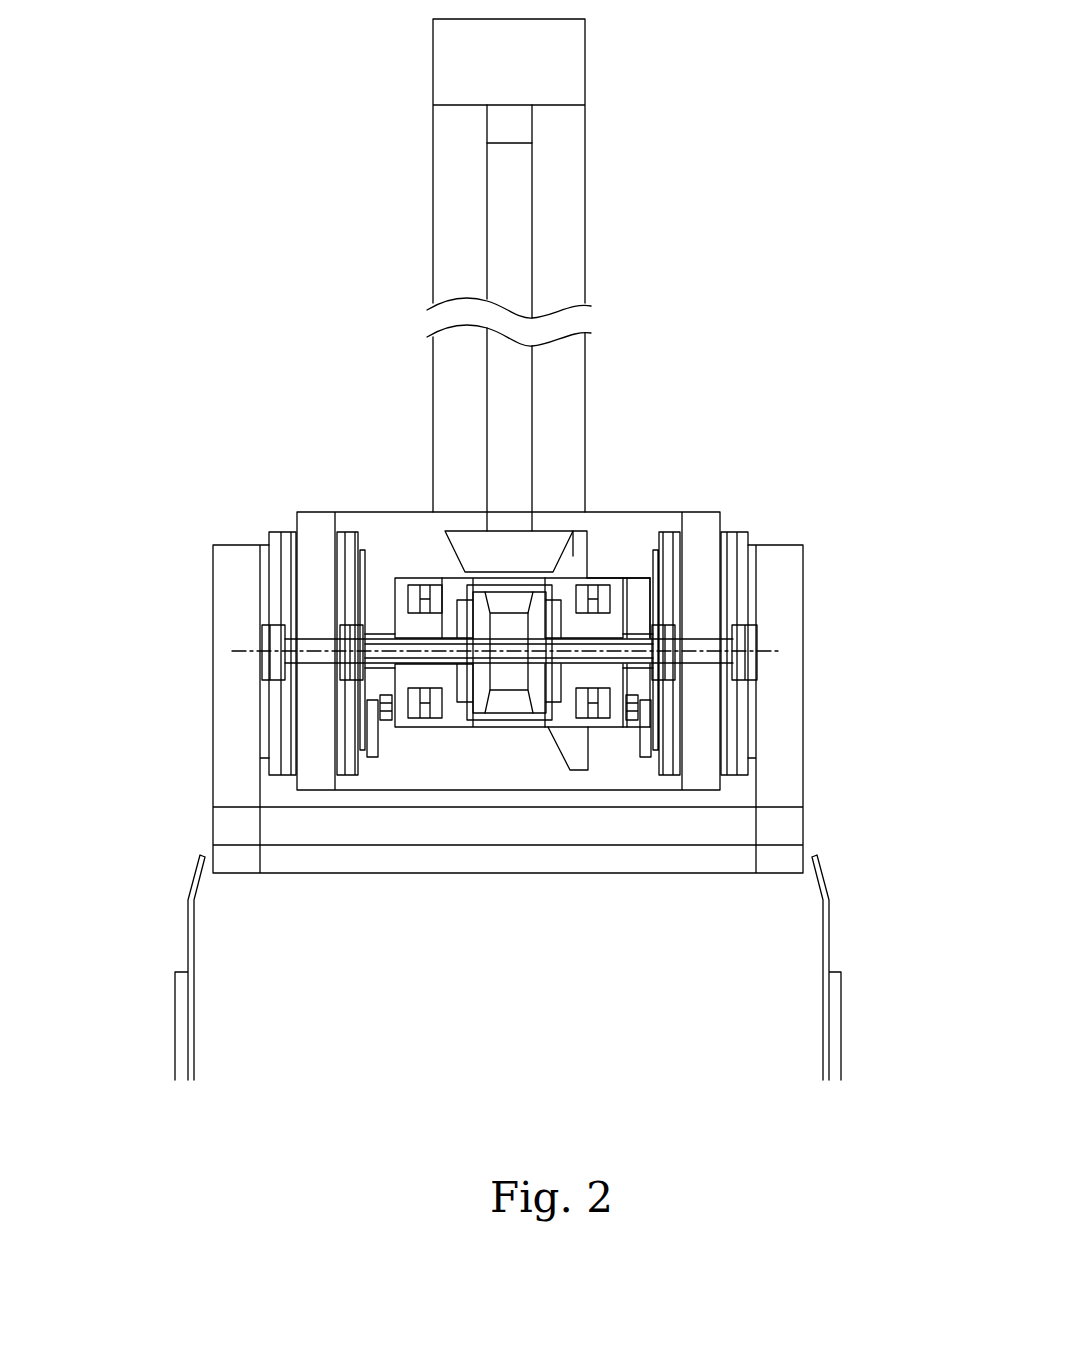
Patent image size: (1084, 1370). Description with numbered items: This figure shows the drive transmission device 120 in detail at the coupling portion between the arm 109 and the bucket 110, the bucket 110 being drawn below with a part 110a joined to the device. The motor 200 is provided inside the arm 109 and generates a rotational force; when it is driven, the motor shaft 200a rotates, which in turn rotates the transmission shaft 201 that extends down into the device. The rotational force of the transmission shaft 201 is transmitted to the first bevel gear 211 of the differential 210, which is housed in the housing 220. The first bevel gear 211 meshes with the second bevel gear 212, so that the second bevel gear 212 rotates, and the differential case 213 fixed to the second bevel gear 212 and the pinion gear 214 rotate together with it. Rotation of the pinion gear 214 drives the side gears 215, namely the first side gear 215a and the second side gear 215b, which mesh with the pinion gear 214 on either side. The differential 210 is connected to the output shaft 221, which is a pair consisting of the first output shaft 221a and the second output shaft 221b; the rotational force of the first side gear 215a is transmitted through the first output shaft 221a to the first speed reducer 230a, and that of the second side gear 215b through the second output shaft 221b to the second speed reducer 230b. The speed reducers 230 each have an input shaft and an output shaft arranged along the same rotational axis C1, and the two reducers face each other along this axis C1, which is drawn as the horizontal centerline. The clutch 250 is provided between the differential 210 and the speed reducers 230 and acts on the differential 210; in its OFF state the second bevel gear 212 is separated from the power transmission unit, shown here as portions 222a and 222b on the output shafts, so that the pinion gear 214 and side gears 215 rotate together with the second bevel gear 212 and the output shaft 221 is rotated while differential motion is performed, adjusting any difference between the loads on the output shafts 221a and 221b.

The motor 200 is at (553, 168).
The motor shaft 200a is at (525, 135).
The transmission shaft 201 is at (524, 242).
The arm 109 is at (566, 423).
The drive transmission device 120 is at (781, 480).
The first bevel gear 211 is at (482, 538).
The differential 210 is at (598, 528).
The second bevel gear 212 is at (575, 557).
The differential case 213 is at (453, 587).
The pinion gear 214 is at (420, 582).
The side gears 215 is at (493, 778).
The first side gear 215a is at (537, 690).
The second side gear 215b is at (482, 690).
The housing 220 is at (627, 790).
The clutch 250 is at (432, 718).
The output shaft 221 is at (502, 649).
The first output shaft 221a is at (727, 680).
The second output shaft 221b is at (343, 645).
The first gear 222a is at (657, 622).
The second gear 222b is at (343, 671).
The speed reducers 230 is at (501, 653).
The first speed reducer 230a is at (740, 608).
The second speed reducer 230b is at (276, 598).
The bucket 110 is at (243, 958).
The housing 110a is at (226, 779).
The rotational axis C1 is at (772, 652).